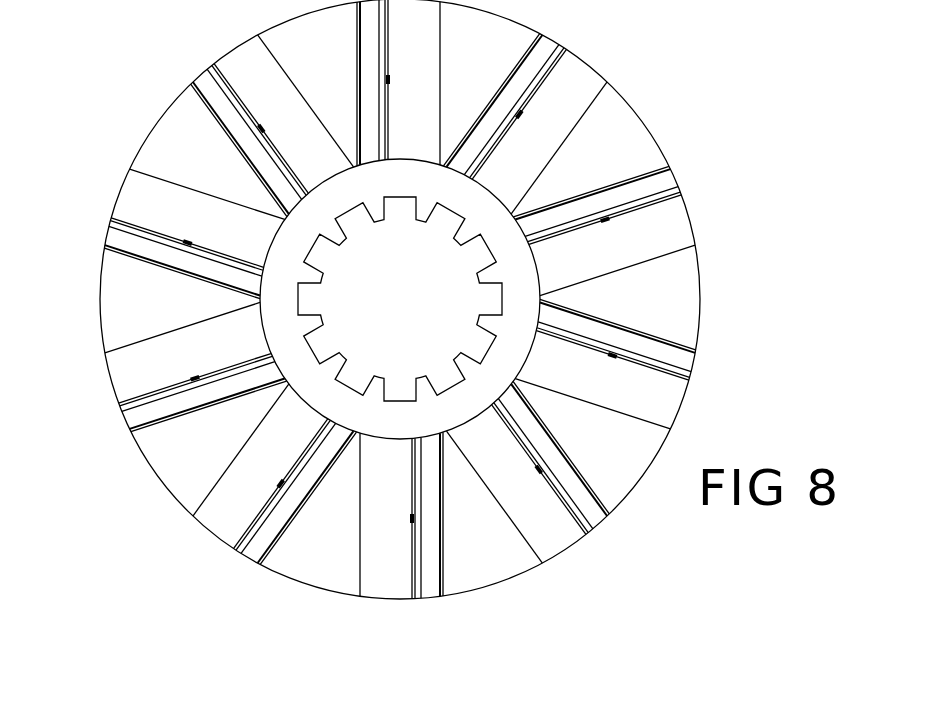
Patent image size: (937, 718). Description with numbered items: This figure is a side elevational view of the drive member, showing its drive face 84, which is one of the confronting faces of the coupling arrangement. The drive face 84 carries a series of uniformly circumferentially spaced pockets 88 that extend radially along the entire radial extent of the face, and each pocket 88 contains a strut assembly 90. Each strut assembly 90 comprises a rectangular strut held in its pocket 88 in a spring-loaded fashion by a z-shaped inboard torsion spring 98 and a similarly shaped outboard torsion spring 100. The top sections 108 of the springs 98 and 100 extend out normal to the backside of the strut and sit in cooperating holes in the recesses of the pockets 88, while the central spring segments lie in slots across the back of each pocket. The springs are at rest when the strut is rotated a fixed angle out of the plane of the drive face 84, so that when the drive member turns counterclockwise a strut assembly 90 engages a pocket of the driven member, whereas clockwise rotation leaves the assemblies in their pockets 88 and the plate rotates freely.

The drive face 84 is at (363, 299).
The pocket 88 is at (392, 299).
The strut assembly 90 is at (663, 182).
The inboard torsion spring 98 is at (583, 228).
The outboard torsion spring 100 is at (645, 206).
The top section 108 is at (550, 72).